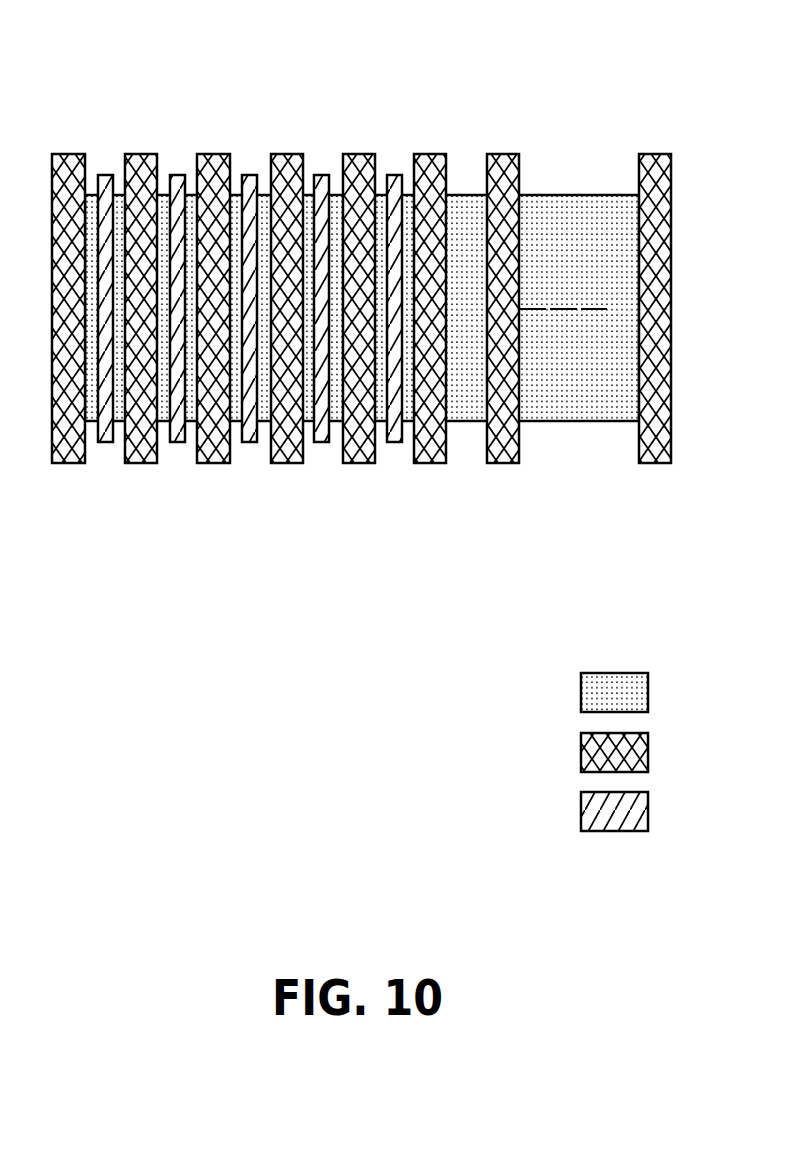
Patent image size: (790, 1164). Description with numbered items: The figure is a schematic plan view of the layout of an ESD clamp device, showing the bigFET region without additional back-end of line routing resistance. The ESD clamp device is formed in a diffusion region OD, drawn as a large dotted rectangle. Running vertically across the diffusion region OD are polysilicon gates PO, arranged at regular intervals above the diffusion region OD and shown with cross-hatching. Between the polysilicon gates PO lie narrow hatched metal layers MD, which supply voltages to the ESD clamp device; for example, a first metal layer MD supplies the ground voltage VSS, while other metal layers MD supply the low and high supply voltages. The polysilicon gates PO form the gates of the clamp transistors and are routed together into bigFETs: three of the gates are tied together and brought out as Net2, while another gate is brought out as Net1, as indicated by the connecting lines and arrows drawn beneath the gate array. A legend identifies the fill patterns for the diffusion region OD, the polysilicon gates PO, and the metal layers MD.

The ground voltage VSS is at (106, 192).
The Net-1 Net1 is at (359, 463).
The Net-2 Net2 is at (213, 463).
The diffusion region OD is at (386, 453).
The polysilicon gates PO is at (370, 463).
The metal layers MD is at (386, 416).